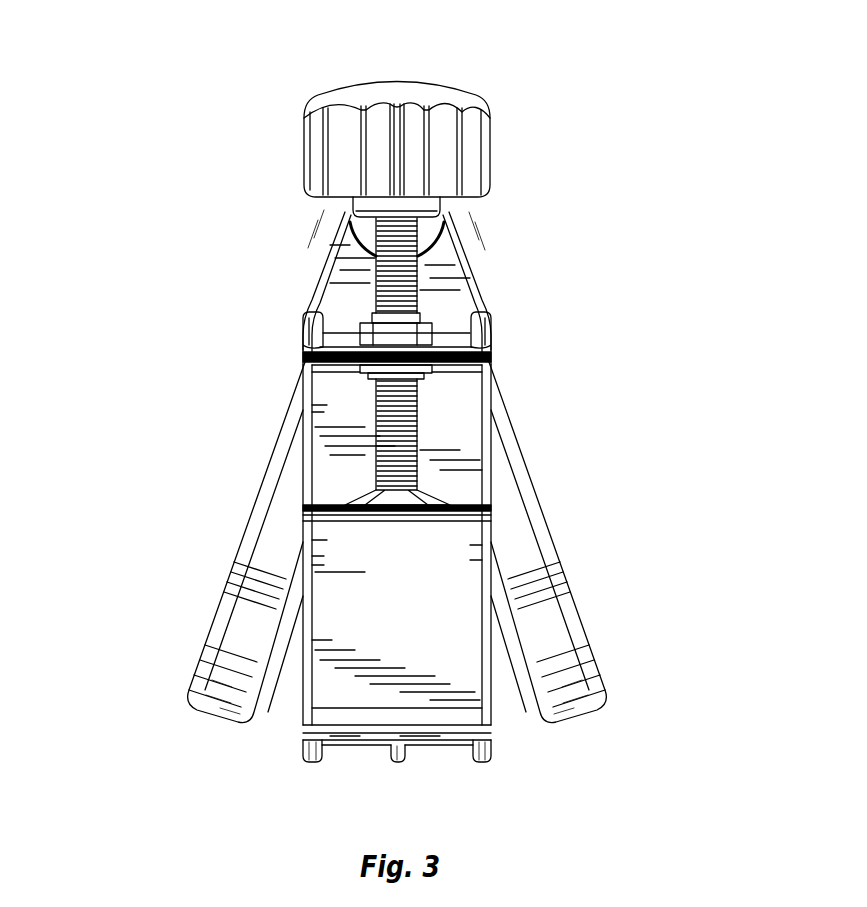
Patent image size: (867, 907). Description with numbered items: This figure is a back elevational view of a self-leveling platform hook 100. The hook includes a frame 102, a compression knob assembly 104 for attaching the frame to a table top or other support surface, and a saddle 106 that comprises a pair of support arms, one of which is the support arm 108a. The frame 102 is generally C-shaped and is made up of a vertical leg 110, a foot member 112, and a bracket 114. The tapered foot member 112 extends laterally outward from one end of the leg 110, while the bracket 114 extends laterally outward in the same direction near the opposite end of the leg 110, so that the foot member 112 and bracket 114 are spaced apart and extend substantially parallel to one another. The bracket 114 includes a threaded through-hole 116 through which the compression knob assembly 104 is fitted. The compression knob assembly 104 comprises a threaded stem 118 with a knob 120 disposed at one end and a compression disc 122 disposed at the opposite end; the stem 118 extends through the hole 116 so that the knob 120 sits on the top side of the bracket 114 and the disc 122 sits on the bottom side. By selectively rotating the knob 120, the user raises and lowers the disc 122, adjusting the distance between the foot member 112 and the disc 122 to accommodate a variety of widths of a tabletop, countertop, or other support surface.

The self-leveling platform hook 100 is at (152, 160).
The frame 102 is at (478, 260).
The compression knob assembly 104 is at (463, 218).
The saddle 106 is at (572, 561).
The support arm 108a is at (270, 487).
The vertical leg 110 is at (470, 420).
The foot member 112 is at (475, 731).
The bracket 114 is at (322, 357).
The threaded through-hole 116 is at (354, 368).
The threaded stem 118 is at (378, 298).
The knob 120 is at (406, 102).
The compression disc 122 is at (433, 500).